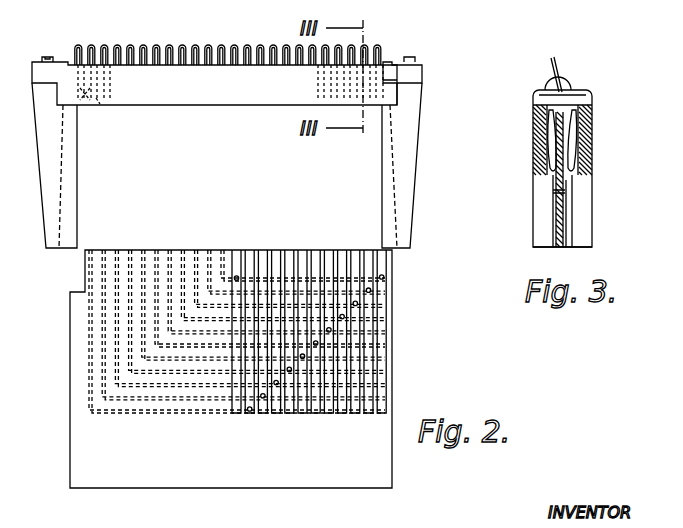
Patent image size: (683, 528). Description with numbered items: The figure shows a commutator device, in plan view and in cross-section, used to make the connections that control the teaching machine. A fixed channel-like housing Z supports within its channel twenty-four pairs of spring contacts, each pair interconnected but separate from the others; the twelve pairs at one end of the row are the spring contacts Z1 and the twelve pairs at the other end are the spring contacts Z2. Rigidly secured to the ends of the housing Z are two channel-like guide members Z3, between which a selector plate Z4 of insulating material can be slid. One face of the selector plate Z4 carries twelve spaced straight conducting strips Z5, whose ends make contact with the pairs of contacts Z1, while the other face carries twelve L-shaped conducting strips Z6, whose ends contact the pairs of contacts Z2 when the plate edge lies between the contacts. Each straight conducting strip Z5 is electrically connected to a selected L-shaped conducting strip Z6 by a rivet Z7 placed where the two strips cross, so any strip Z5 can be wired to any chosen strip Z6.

In FIG. 2, the channel-like housing Z is at (410, 72).
In FIG. 3, the channel-like housing Z is at (535, 140).
In FIG. 2, the spring contacts Z1 is at (336, 82).
In FIG. 3, the spring contacts Z1 is at (576, 144).
In FIG. 2, the spring contacts Z2 is at (90, 106).
In FIG. 2, the channel-like guide members Z3 is at (54, 200).
In FIG. 3, the channel-like guide members Z3 is at (580, 207).
In FIG. 2, the selector plate Z4 is at (76, 454).
In FIG. 3, the selector plate Z4 is at (556, 232).
In FIG. 2, the straight conducting strips Z5 is at (314, 416).
In FIG. 3, the straight conducting strips Z5 is at (568, 233).
In FIG. 2, the L-shaped conducting strips Z6 is at (106, 326).
In FIG. 3, the L-shaped conducting strips Z6 is at (556, 216).
In FIG. 2, the rivet Z7 is at (372, 289).
In FIG. 3, the rivet Z7 is at (553, 192).